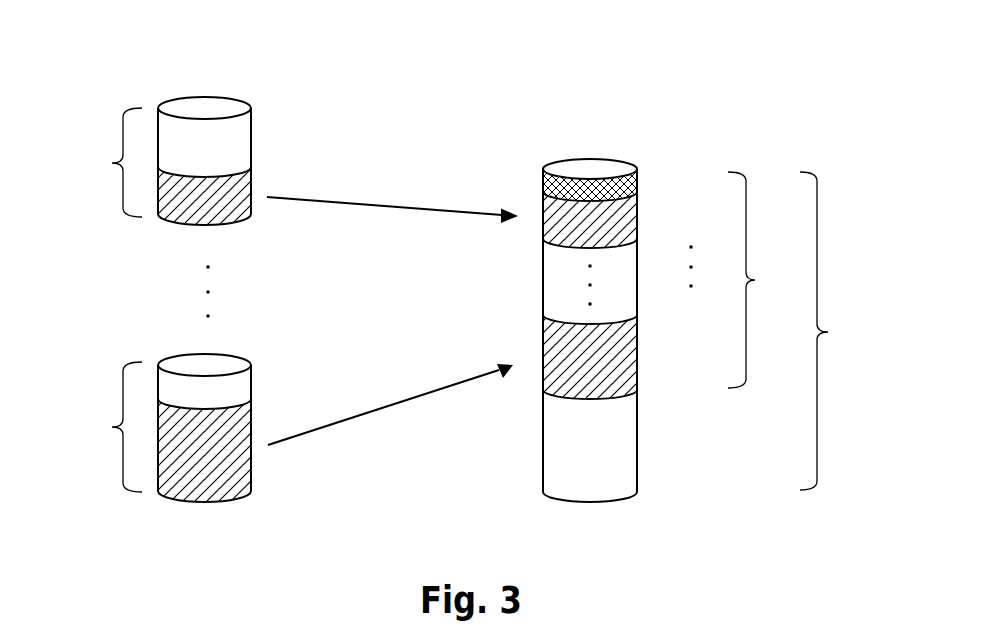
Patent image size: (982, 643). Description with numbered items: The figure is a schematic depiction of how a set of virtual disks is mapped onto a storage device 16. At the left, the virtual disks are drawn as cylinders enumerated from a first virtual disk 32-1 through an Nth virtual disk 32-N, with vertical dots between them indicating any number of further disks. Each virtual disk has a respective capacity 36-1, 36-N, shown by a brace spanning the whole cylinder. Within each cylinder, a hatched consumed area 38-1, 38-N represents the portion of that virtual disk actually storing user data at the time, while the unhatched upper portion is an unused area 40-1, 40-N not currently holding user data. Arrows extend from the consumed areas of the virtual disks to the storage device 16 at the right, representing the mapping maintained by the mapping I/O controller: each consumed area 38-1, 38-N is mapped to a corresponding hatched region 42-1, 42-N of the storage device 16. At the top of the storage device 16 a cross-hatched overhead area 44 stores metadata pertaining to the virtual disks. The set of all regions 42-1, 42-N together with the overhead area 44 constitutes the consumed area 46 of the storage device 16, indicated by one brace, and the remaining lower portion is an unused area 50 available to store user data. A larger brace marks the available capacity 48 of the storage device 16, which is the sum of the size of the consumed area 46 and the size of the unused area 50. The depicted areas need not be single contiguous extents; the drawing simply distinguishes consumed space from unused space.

The storage device 16 is at (605, 313).
The virtual disk 32-1 is at (208, 144).
The virtual disk 32-N is at (210, 410).
The capacity 36-1 is at (102, 162).
The capacity 36-N is at (100, 427).
The consumed area 38-1 is at (247, 178).
The consumed area 38-N is at (247, 476).
The unused area 40-1 is at (247, 124).
The unused area 40-N is at (247, 385).
The region 42-1 is at (632, 214).
The region 42-N is at (632, 354).
The overhead area 44 is at (639, 175).
The consumed area 46 is at (760, 280).
The available capacity 48 is at (833, 331).
The unused area 50 is at (630, 428).